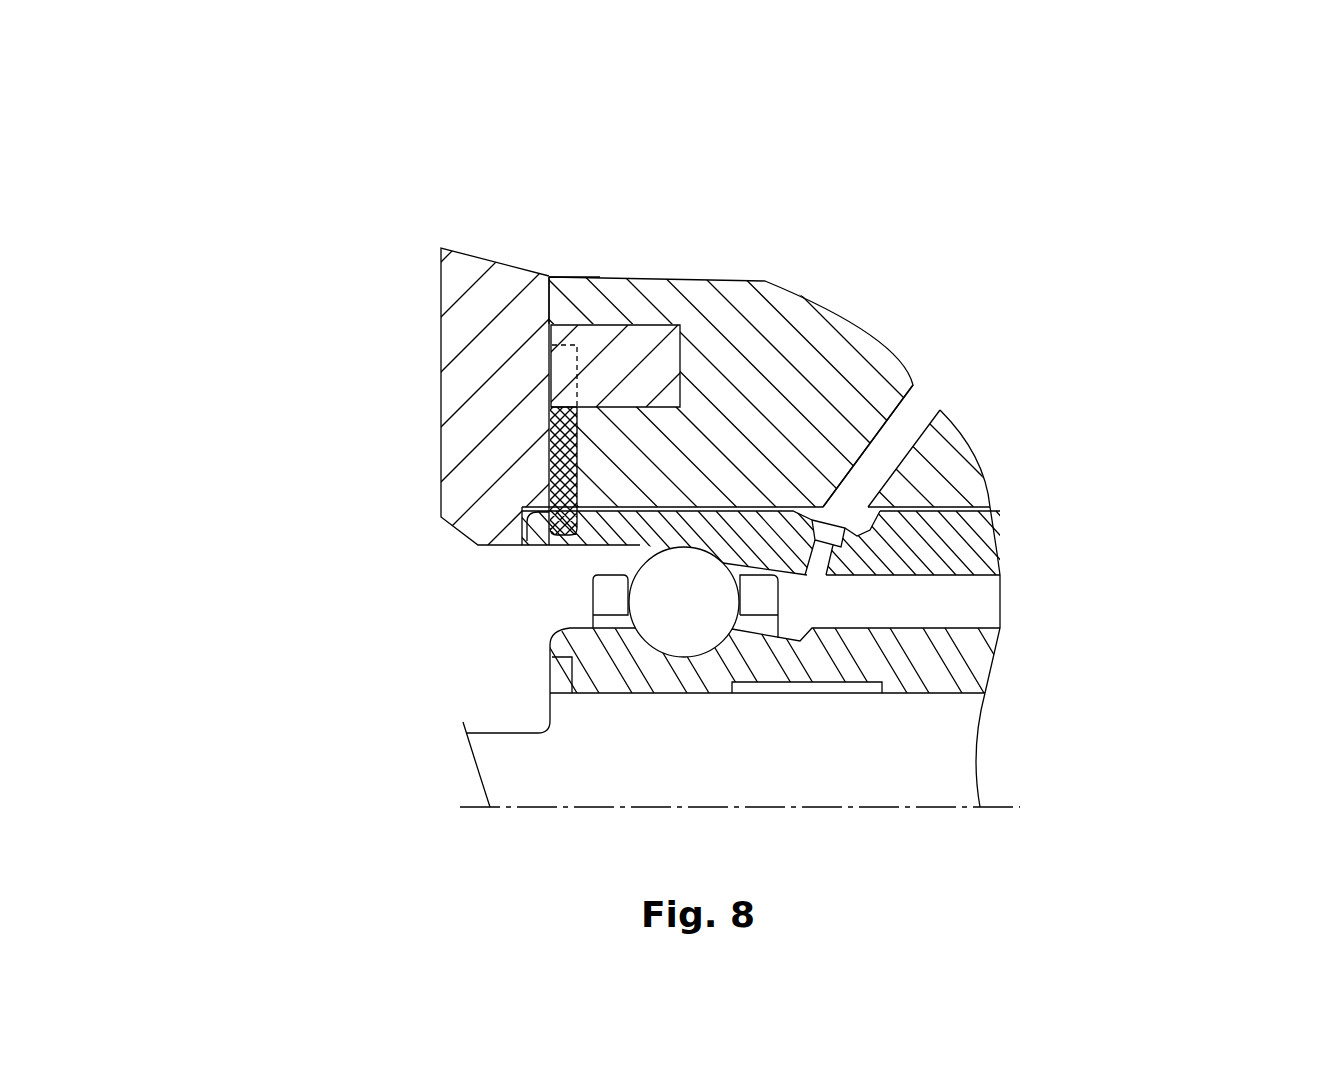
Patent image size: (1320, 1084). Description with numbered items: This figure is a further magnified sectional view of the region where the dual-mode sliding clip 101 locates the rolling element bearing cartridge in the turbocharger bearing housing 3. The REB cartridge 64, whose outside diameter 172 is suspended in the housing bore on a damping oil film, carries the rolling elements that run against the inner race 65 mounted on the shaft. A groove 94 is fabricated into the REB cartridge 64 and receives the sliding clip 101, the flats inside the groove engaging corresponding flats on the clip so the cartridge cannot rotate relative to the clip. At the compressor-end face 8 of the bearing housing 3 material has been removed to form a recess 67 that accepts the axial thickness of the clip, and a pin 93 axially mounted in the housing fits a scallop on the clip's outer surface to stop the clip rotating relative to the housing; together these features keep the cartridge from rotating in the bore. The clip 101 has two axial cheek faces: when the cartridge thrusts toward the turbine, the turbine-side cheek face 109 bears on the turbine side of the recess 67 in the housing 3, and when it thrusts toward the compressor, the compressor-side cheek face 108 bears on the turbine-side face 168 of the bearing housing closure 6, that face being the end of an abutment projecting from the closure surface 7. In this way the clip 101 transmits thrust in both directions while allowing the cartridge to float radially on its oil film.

The bearing housing 3 is at (795, 320).
The bearing housing closure 6 is at (478, 323).
The surface of the bearing housing closure 7 is at (550, 320).
The compressor-end face 8 is at (555, 287).
The pin 93 is at (627, 367).
The dual-mode sliding clip 101 is at (567, 430).
The turbine-side face of the bearing housing closure 168 is at (545, 459).
The turbine-side cheek face 109 is at (578, 462).
The groove 94 is at (563, 535).
The recess 67 is at (566, 468).
The compressor-side cheek face 108 is at (578, 500).
The outer diameter of the cartridge 172 is at (933, 516).
The REB cartridge 64 is at (930, 553).
The inner race 65 is at (945, 657).